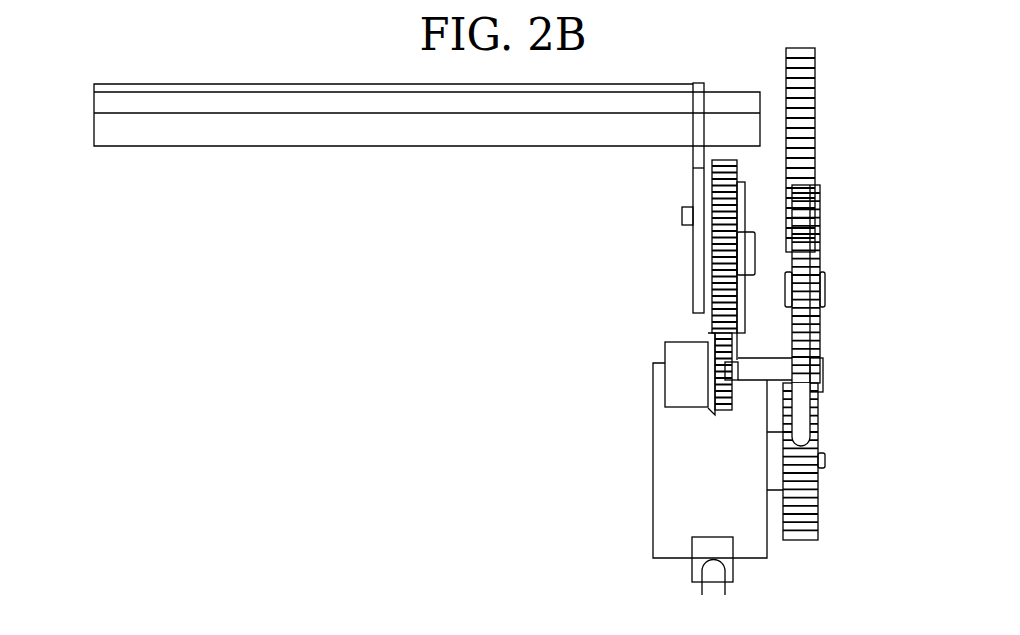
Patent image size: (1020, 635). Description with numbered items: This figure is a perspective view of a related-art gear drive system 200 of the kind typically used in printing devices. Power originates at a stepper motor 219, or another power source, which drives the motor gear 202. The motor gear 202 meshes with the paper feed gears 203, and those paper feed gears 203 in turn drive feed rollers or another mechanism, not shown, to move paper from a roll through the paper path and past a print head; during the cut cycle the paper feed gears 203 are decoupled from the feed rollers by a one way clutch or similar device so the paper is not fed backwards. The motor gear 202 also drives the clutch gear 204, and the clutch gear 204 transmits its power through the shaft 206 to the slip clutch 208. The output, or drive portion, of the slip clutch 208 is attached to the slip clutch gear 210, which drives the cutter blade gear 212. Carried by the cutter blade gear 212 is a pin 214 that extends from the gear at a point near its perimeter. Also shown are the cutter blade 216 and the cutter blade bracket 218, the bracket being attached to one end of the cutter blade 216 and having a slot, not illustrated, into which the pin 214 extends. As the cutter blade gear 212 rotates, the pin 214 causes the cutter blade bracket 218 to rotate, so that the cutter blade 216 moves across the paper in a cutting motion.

The gear drive system 200 is at (143, 75).
The motor gear 202 is at (822, 518).
The paper feed gears 203 is at (817, 127).
The clutch gear 204 is at (810, 375).
The shaft 206 is at (748, 372).
The slip clutch 208 is at (678, 378).
The slip clutch gear 210 is at (722, 413).
The cutter blade gear 212 is at (712, 310).
The pin 214 is at (710, 213).
The cutter blade 216 is at (360, 152).
The cutter blade bracket 218 is at (693, 247).
The stepper motor 219 is at (745, 517).